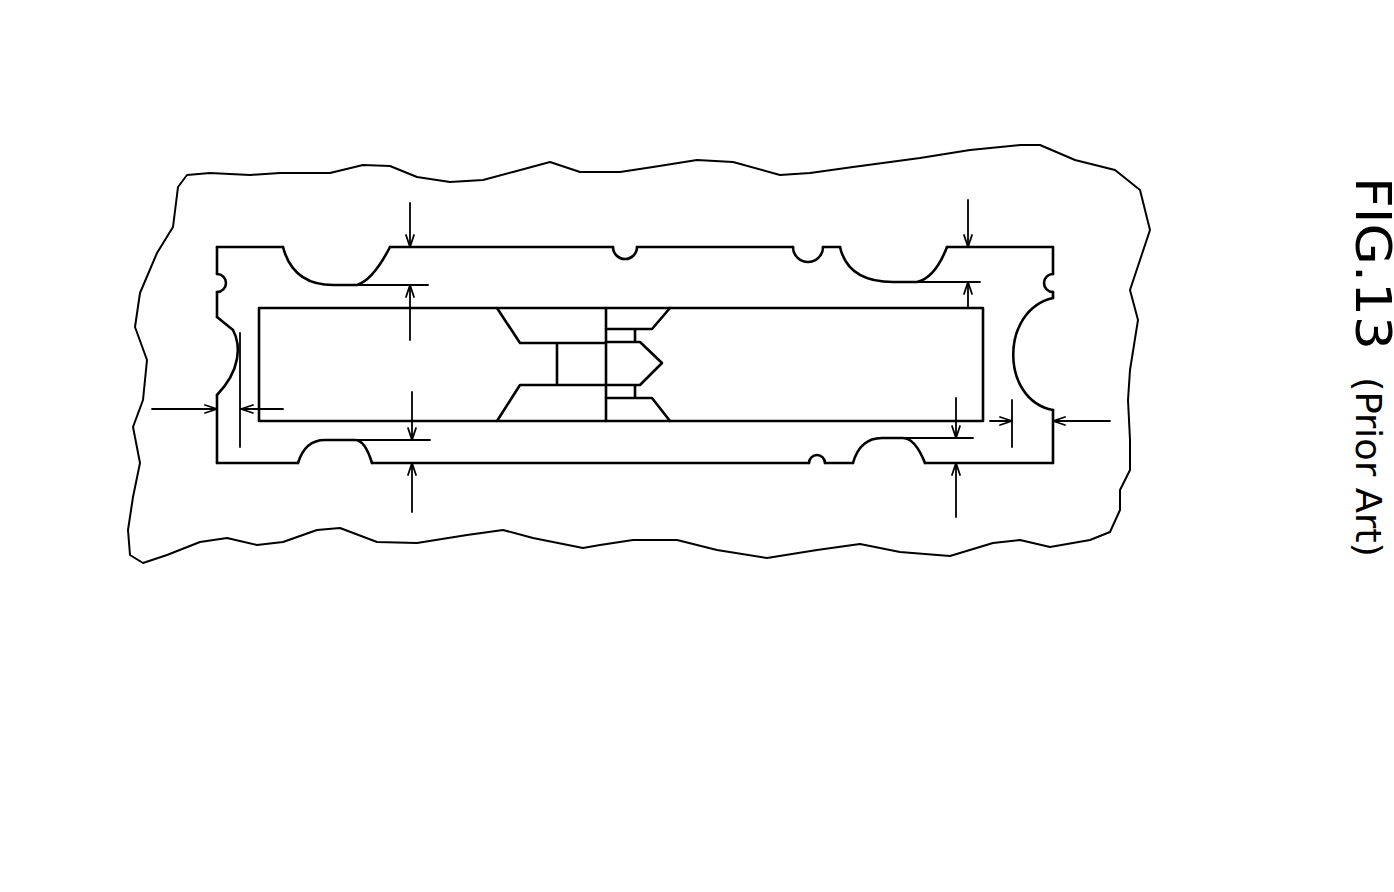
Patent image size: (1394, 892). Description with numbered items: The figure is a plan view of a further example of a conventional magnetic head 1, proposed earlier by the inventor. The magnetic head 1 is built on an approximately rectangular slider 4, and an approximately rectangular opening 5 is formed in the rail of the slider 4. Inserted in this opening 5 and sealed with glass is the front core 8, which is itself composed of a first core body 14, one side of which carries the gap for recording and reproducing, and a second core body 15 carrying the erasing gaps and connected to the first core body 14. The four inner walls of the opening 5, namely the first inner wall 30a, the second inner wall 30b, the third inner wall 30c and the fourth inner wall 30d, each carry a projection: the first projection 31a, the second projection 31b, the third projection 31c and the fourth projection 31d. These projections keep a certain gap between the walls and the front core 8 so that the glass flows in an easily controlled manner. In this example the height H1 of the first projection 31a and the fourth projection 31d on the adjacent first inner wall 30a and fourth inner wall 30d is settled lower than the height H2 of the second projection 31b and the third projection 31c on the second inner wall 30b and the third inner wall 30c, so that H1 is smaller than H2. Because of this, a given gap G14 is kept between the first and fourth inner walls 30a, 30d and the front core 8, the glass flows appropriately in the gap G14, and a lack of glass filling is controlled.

The magnetic head 1 is at (1138, 158).
The slider 4 is at (1107, 220).
The opening 5 is at (751, 257).
The front core 8 is at (669, 247).
The first core body 14 is at (635, 280).
The second core body 15 is at (621, 254).
The first inner wall 30a is at (228, 295).
The second inner wall 30b is at (660, 146).
The third inner wall 30c is at (1052, 290).
The fourth inner wall 30d is at (803, 546).
The first projection 31a is at (268, 237).
The second projection 31b is at (645, 166).
The third projection 31c is at (1020, 360).
The fourth projection 31d is at (620, 538).
The gap G14 is at (200, 525).
The height of first and fourth projections H1 is at (562, 430).
The height of second and third projections H2 is at (736, 322).